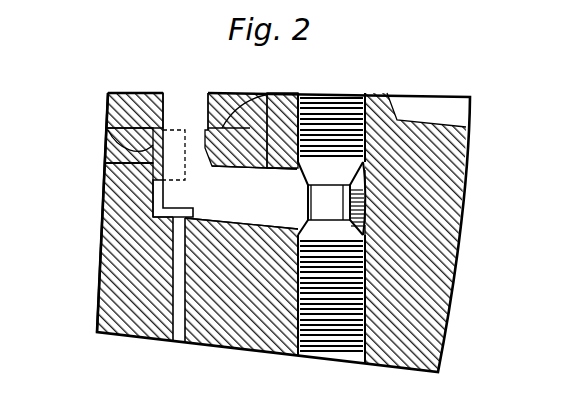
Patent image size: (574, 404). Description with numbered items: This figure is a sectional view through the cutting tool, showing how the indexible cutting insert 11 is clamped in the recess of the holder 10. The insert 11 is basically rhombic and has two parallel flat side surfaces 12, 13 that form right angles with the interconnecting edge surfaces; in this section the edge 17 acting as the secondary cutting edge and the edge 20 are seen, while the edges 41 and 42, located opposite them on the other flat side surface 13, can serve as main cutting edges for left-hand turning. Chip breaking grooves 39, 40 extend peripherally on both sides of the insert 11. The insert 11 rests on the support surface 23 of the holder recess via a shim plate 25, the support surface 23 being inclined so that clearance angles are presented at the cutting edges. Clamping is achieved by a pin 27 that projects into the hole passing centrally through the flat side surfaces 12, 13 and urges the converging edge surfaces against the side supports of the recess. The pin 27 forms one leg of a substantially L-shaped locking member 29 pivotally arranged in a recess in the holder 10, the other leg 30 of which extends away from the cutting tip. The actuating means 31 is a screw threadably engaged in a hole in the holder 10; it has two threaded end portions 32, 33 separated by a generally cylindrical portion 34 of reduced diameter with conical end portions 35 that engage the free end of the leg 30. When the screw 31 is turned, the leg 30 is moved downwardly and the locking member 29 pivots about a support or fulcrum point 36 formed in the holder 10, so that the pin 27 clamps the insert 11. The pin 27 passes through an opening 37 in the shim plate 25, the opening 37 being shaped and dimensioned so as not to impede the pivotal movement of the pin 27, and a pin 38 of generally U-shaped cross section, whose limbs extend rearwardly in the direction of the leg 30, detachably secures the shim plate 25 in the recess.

The holder 10 is at (415, 145).
The indexible cutting insert 11 is at (223, 93).
The flat side surface 12 is at (140, 93).
The flat side surface 13 is at (110, 157).
The secondary cutting edge 17 is at (110, 93).
The edge 20 is at (268, 128).
The support surface 23 is at (112, 175).
The shim plate 25 is at (257, 153).
The pin 27 is at (180, 107).
The L-shaped locking member 29 is at (175, 190).
The leg 30 is at (252, 207).
The actuating means 31 is at (347, 107).
The threaded end portion 32 is at (366, 128).
The threaded end portion 33 is at (360, 295).
The cylindrical portion 34 is at (367, 212).
The conical end portion 35 is at (367, 183).
The fulcrum point 36 is at (173, 240).
The opening 37 is at (262, 76).
The pin 38 is at (160, 168).
The chip breaking groove 39 is at (118, 93).
The chip breaking groove 40 is at (113, 142).
The edge 41 is at (112, 131).
The edge 42 is at (300, 110).